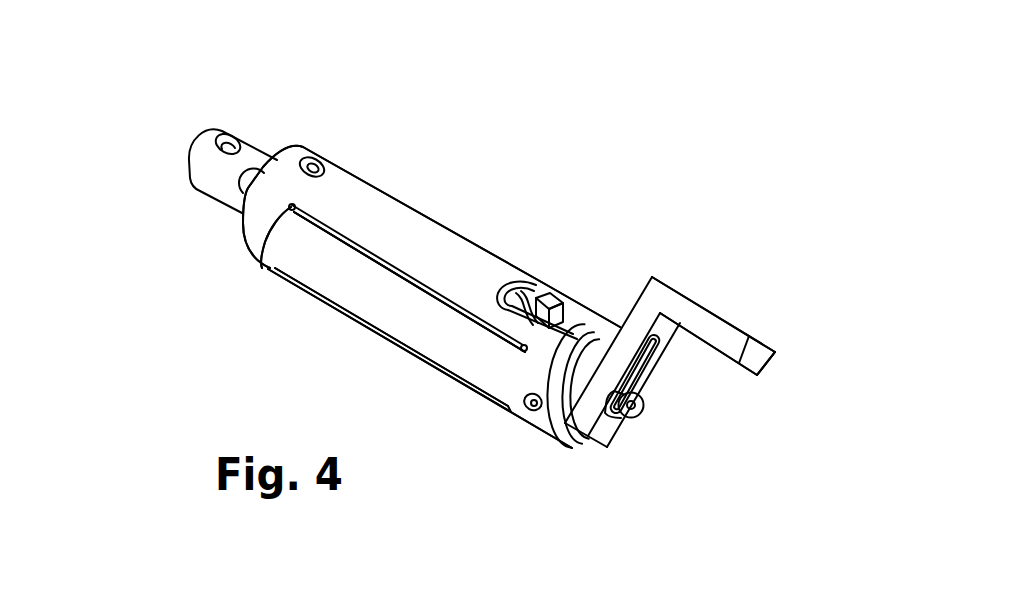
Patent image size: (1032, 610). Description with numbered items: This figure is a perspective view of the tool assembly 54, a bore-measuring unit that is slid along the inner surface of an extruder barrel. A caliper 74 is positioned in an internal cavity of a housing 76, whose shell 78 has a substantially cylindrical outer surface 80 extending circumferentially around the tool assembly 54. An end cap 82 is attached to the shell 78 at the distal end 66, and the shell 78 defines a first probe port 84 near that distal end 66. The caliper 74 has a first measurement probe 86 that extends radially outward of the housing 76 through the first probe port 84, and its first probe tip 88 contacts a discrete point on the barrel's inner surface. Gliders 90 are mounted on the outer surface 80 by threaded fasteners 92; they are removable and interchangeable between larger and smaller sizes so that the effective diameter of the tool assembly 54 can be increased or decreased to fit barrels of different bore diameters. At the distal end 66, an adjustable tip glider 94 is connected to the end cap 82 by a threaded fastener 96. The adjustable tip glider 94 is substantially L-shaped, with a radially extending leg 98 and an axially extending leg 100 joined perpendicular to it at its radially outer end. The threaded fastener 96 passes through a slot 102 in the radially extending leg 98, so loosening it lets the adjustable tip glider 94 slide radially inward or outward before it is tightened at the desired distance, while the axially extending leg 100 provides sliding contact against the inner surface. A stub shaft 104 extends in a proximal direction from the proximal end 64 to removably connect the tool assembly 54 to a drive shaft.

The tool assembly 54 is at (583, 158).
The proximal end 64 is at (245, 250).
The distal end 66 is at (577, 445).
The caliper 74 is at (582, 315).
The housing 76 is at (298, 136).
The shell 78 is at (378, 166).
The outer surface 80 is at (347, 287).
The end cap 82 is at (583, 444).
The first probe port 84 is at (532, 282).
The first measurement probe 86 is at (548, 306).
The first probe tip 88 is at (553, 305).
The gliders 90 is at (392, 278).
The threaded fasteners 92 is at (267, 270).
The adjustable tip glider 94 is at (766, 381).
The threaded fastener 96 is at (642, 412).
The radially extending leg 98 is at (641, 322).
The axially extending leg 100 is at (735, 345).
The slot 102 is at (655, 367).
The stub shaft 104 is at (203, 190).